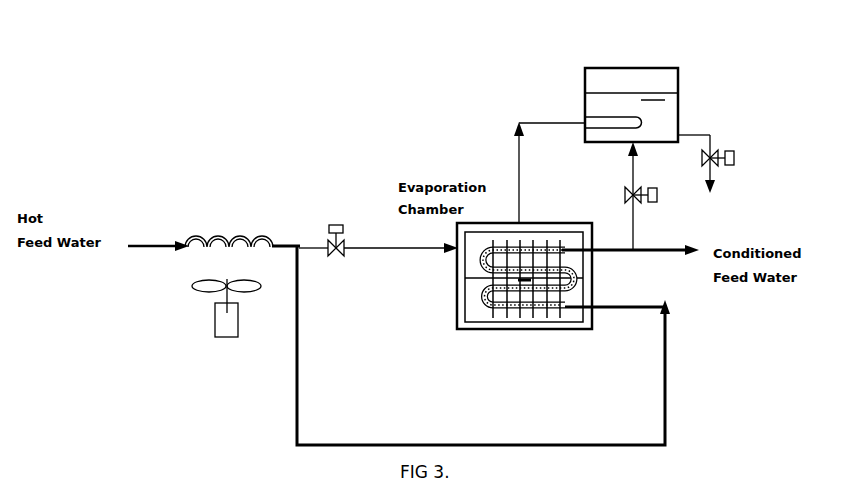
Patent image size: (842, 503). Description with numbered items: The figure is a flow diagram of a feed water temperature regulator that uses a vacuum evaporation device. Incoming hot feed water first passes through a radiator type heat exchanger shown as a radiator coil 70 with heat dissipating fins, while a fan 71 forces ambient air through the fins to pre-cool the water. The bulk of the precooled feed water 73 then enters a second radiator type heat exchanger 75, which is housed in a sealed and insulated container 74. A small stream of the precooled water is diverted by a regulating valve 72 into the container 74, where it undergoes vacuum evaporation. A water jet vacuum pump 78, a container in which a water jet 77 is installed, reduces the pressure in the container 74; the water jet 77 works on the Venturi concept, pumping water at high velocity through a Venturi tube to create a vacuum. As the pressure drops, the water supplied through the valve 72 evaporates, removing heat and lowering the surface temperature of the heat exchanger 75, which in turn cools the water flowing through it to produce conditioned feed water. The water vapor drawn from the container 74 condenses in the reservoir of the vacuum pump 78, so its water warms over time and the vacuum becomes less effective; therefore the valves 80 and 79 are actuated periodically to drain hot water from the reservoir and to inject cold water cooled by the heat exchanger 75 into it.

The radiator coil 70 is at (192, 240).
The fan 71 is at (205, 292).
The regulating valve 72 is at (326, 228).
The precooled feed water 73 is at (293, 397).
The sealed and insulated container 74 is at (583, 330).
The second radiator type heat exchanger 75 is at (485, 320).
The water jet 77 is at (590, 115).
The water jet vacuum pump 78 is at (585, 75).
The valve 79 is at (628, 192).
The valve 80 is at (718, 152).